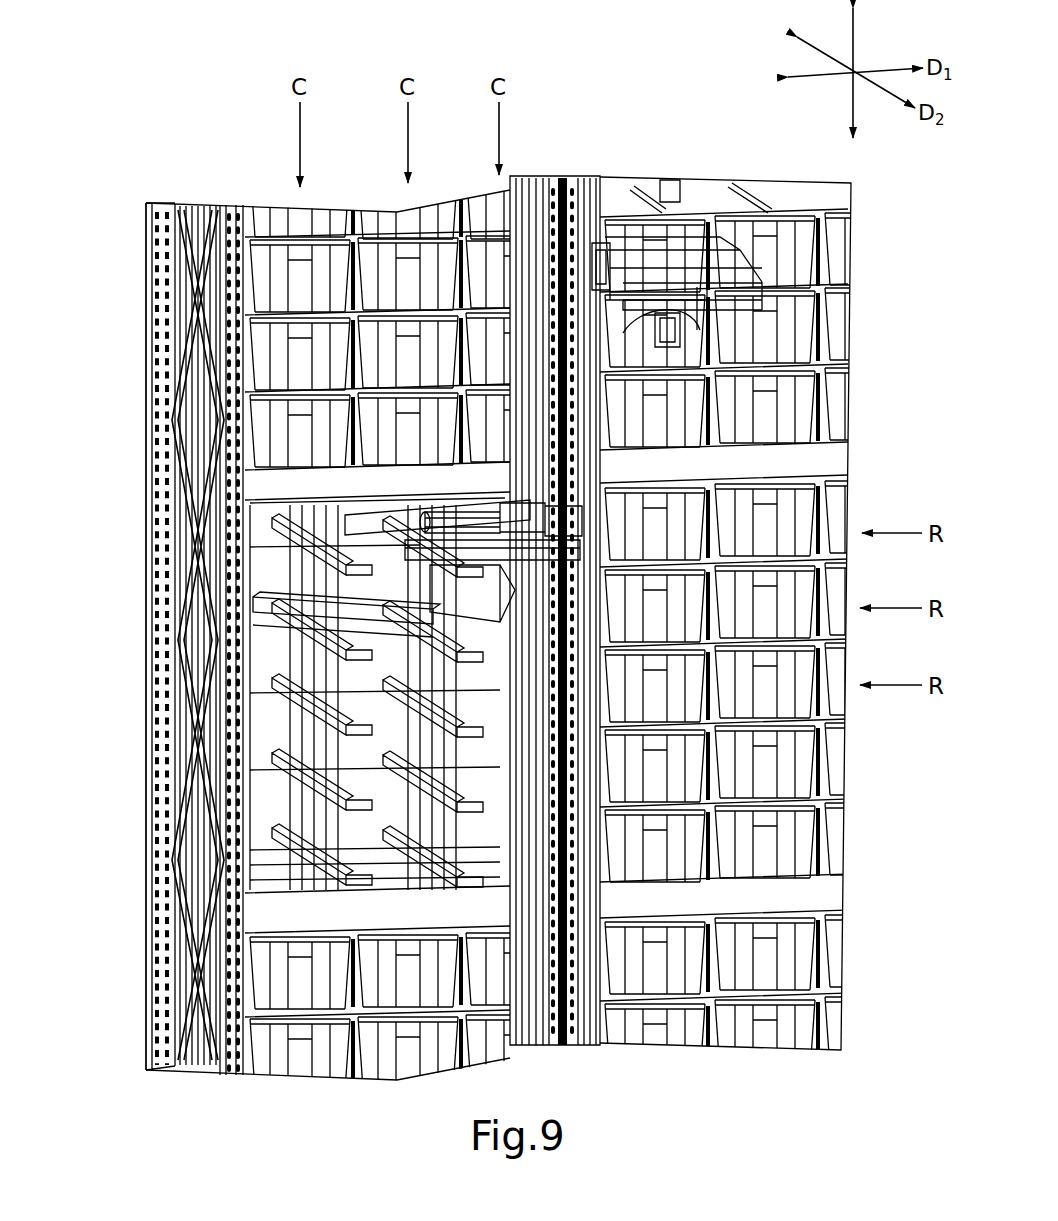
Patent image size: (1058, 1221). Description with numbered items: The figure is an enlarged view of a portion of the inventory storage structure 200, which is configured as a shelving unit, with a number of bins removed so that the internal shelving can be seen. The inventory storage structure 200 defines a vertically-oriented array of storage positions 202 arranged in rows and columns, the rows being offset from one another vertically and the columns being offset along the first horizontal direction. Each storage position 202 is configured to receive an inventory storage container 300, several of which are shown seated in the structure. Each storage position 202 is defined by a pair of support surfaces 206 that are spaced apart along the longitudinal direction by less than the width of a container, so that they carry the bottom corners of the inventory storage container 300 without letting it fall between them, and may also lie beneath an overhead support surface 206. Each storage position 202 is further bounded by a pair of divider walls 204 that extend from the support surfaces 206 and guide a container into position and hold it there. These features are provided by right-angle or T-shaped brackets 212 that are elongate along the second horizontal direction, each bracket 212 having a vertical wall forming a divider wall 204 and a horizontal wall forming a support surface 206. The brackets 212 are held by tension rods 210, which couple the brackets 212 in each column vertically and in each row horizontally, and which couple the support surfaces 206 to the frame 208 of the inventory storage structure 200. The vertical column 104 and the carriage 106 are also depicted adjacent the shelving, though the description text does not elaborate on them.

The inventory storage structure 200 is at (103, 180).
The vertical column 104 is at (598, 200).
The carriage 106 is at (440, 512).
The storage position 202 is at (372, 627).
The divider wall 204 is at (385, 677).
The support surface 206 is at (410, 730).
The frame 208 is at (146, 803).
The tension rod 210 is at (410, 833).
The bracket 212 is at (372, 560).
The inventory storage container 300 is at (818, 693).